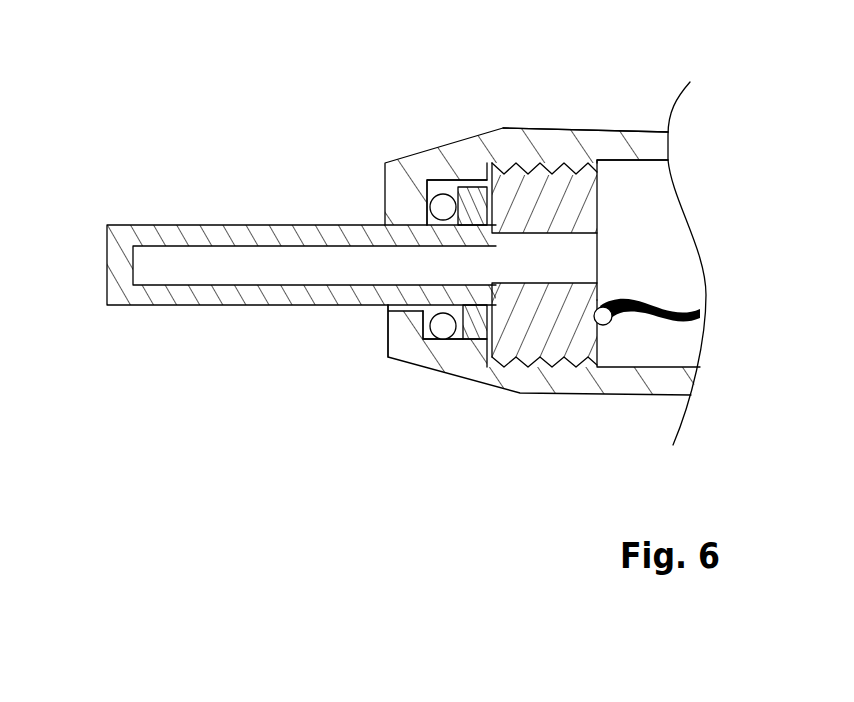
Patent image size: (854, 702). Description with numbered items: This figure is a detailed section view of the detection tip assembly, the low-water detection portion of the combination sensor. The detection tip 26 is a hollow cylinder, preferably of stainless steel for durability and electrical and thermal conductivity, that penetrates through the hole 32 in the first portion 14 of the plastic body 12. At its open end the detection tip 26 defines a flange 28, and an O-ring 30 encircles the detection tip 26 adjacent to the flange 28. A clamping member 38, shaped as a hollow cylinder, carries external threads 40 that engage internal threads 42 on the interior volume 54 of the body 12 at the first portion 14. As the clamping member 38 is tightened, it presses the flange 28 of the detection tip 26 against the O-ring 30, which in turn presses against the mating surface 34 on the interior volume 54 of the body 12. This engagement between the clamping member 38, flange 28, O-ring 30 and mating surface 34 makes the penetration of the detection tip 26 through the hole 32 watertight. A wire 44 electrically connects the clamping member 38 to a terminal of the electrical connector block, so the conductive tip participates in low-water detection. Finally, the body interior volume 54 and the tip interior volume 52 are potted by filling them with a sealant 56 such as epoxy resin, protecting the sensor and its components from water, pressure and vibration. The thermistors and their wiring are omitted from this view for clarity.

The body 12 is at (570, 128).
The first portion 14 is at (470, 137).
The detection tip 26 is at (104, 229).
The flange 28 is at (473, 333).
The O-ring 30 is at (445, 196).
The hole 32 is at (386, 312).
The mating surface 34 is at (420, 322).
The clamping member 38 is at (526, 347).
The external threads 40 is at (550, 368).
The internal threads 42 is at (533, 165).
The wire 44 is at (612, 328).
The tip interior volume 52 is at (212, 272).
The body interior volume 54 is at (642, 197).
The sealant 56 is at (662, 268).